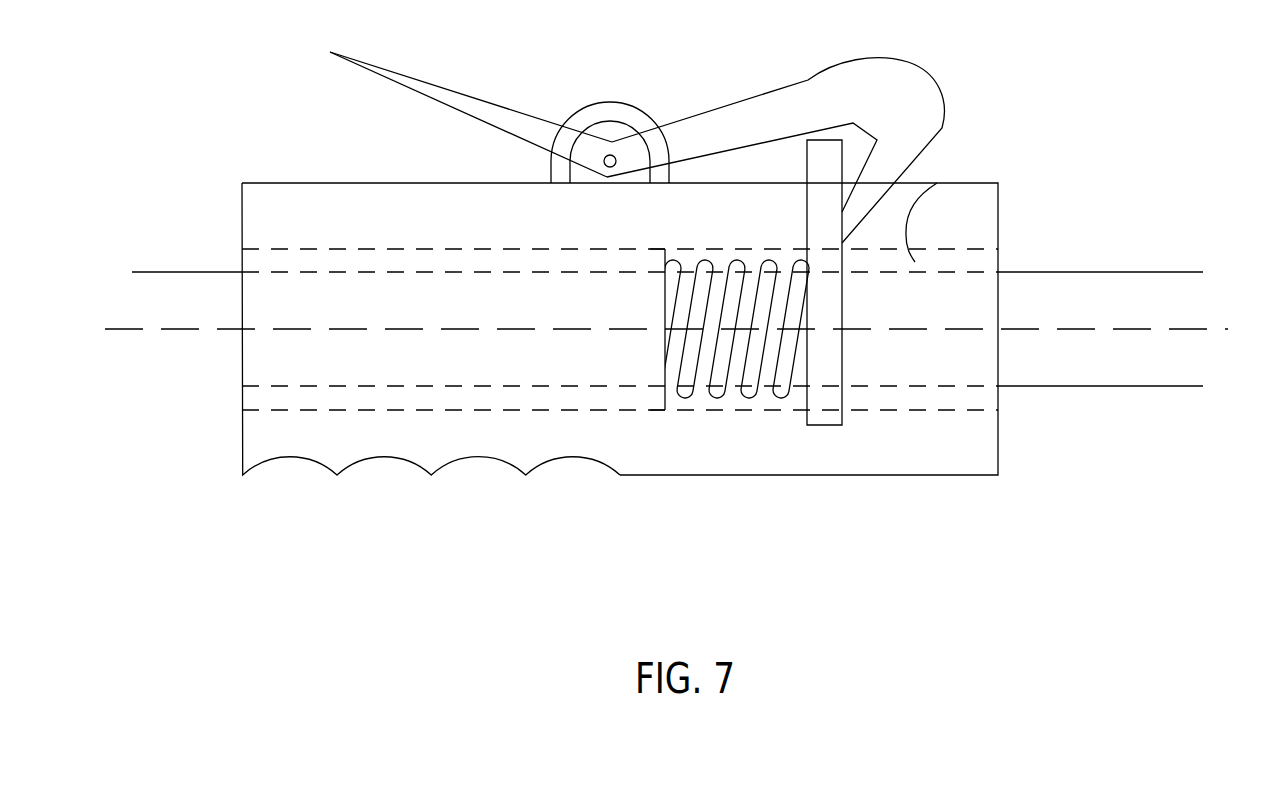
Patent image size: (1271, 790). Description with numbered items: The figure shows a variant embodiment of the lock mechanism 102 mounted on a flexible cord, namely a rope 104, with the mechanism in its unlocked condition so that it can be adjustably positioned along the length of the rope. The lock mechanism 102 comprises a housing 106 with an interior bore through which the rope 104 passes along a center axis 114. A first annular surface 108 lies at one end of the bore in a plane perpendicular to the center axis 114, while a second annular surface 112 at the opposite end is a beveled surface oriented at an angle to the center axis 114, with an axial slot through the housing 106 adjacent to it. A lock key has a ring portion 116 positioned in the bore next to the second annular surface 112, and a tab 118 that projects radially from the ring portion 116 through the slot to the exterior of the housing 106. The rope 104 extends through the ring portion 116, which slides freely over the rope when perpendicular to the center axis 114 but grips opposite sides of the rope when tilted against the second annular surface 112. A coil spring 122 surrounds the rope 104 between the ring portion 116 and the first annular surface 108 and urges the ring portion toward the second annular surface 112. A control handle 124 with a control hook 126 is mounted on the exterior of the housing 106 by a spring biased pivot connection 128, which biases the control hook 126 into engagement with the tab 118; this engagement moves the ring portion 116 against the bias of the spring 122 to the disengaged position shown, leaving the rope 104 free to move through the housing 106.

The lock mechanism 102 is at (293, 183).
The rope 104 is at (172, 271).
The housing 106 is at (252, 437).
The first annular surface 108 is at (665, 363).
The second annular surface 112 is at (837, 437).
The center axis 114 is at (1199, 331).
The ring portion 116 is at (828, 365).
The tab 118 is at (825, 157).
The spring 122 is at (707, 264).
The control handle 124 is at (468, 105).
The control hook 126 is at (897, 167).
The spring biased pivot connection 128 is at (614, 156).